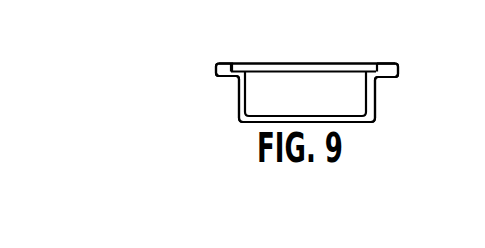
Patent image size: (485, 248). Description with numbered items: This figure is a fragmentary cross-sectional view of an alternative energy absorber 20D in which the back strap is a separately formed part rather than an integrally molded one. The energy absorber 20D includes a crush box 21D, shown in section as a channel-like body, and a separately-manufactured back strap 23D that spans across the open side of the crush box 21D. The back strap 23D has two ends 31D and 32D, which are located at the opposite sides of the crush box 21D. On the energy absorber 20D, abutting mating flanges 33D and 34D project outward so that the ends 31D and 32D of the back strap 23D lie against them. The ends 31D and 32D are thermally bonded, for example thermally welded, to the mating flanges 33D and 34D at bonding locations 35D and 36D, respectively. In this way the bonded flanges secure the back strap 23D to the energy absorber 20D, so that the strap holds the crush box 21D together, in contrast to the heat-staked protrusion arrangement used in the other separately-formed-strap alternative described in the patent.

The energy absorber 20D is at (197, 100).
The crush box 21D is at (231, 112).
The back strap 23D is at (285, 62).
The end of back strap 31D is at (223, 62).
The end of back strap 32D is at (405, 54).
The mating flange 33D is at (218, 79).
The mating flange 34D is at (392, 78).
The bonding location 35D is at (232, 61).
The bonding location 36D is at (376, 62).